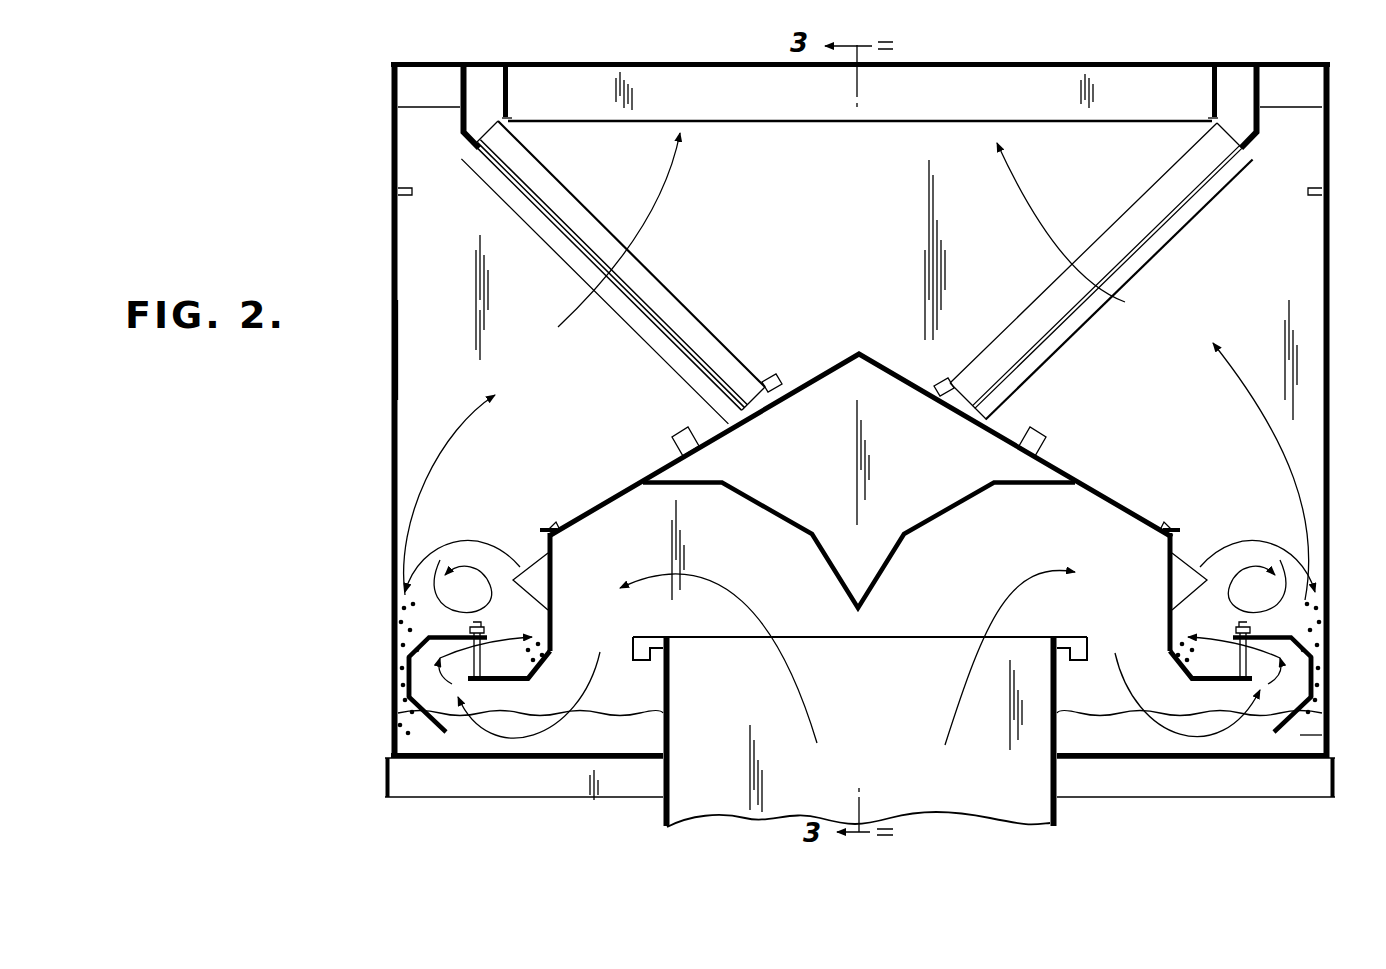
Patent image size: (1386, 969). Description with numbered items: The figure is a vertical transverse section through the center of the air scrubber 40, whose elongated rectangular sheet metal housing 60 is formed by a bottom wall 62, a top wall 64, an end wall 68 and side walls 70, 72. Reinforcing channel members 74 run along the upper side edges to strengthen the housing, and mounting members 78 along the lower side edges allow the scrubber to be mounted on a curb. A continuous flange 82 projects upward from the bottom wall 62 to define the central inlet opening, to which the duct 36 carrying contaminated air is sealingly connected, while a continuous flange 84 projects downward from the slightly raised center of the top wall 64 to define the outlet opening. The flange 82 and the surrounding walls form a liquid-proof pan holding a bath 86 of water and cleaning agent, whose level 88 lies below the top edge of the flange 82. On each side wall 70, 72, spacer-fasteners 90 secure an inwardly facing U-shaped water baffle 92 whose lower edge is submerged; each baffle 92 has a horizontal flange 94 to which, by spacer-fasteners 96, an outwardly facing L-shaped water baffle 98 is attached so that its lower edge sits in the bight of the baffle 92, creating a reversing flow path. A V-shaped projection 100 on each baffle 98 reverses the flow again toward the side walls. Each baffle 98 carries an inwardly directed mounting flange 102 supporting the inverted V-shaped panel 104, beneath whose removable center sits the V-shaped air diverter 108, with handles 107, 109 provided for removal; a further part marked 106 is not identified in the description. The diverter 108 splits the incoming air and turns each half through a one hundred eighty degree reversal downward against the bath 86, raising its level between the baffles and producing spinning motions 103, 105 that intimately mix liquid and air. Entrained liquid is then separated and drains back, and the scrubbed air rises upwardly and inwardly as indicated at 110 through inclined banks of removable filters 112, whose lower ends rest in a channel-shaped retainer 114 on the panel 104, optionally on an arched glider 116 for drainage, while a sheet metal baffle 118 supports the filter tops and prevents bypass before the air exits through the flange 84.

The duct 36 is at (876, 756).
The scrubber 40 is at (876, 252).
The housing 60 is at (1337, 385).
The bottom wall 62 is at (545, 760).
The top wall 64 is at (440, 62).
The end wall 68 is at (398, 405).
The side wall 70 is at (398, 328).
The side wall 72 is at (1323, 258).
The reinforcing channel members 74 is at (400, 135).
The mounting members 78 is at (398, 780).
The flange 82 is at (1057, 688).
The flange 84 is at (513, 85).
The bath 86 is at (1305, 733).
The level 88 is at (1180, 718).
The spacer-fasteners 90 is at (406, 670).
The water baffle 92 is at (410, 650).
The flange 94 is at (430, 636).
The spacer-fasteners 96 is at (530, 665).
The water baffle 98 is at (556, 640).
The V-shaped projection 100 is at (545, 548).
The mounting flange 102 is at (560, 532).
The spinning motion 103 is at (405, 696).
The panel 104 is at (840, 352).
The spinning motion 105 is at (470, 600).
The lip 106 is at (553, 525).
The handle 107 is at (680, 440).
The air diverter 108 is at (790, 522).
The handle 109 is at (1045, 440).
The scrubbed air flow 110 is at (480, 418).
The filters 112 is at (680, 292).
The retainer 114 is at (768, 380).
The glider 116 is at (945, 398).
The baffle 118 is at (467, 90).